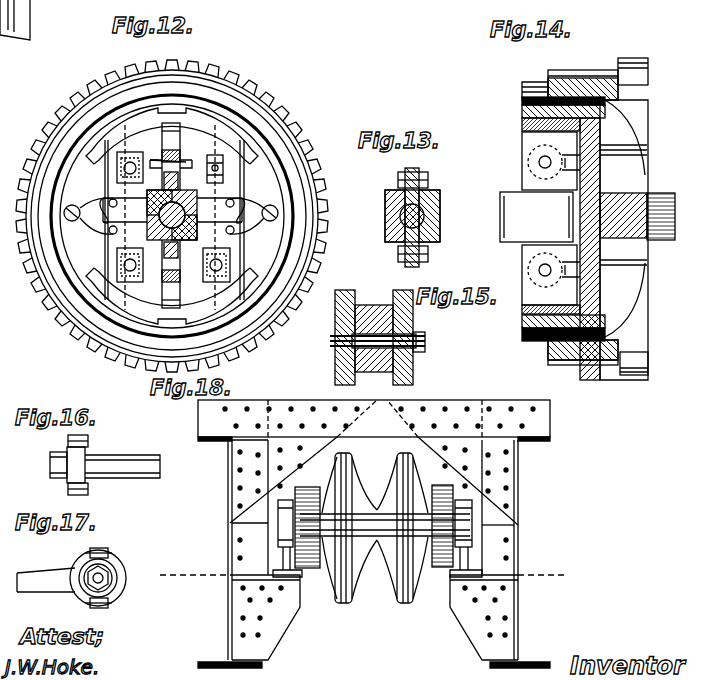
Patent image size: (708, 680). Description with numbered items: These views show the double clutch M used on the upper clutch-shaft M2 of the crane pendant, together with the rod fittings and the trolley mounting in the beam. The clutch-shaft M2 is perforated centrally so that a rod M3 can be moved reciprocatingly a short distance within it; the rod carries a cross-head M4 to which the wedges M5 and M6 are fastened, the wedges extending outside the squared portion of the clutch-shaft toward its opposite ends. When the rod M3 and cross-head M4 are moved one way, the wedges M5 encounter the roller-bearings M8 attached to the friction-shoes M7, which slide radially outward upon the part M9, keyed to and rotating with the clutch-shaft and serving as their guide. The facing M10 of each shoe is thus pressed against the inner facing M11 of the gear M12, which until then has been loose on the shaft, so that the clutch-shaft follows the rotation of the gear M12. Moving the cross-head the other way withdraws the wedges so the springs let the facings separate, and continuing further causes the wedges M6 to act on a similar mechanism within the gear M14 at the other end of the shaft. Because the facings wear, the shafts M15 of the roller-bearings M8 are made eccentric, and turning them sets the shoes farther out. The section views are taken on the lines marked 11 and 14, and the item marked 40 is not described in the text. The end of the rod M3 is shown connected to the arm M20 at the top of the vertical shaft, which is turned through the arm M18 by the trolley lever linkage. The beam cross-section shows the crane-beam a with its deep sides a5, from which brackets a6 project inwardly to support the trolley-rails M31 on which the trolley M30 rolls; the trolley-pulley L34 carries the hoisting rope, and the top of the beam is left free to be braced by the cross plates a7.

In FIG. 12, the section line 11 is at (173, 62).
In FIG. 12, the section line 14 is at (213, 62).
In FIG. 12, the gear M14 is at (248, 82).
In FIG. 14, the gear M14 is at (633, 208).
In FIG. 12, the gear M12 is at (172, 216).
In FIG. 14, the gear M12 is at (583, 208).
In FIG. 12, the facing M11 is at (172, 210).
In FIG. 14, the facing M11 is at (563, 203).
In FIG. 12, the facing M10 is at (172, 217).
In FIG. 12, the friction-shoe M7 is at (173, 207).
In FIG. 15, the friction-shoe M7 is at (382, 337).
In FIG. 14, the friction-shoe M7 is at (551, 216).
In FIG. 12, the roller-bearing M8 is at (171, 156).
In FIG. 15, the roller-bearing M8 is at (377, 330).
In FIG. 14, the roller-bearing M8 is at (522, 160).
In FIG. 12, the shaft M15 is at (186, 160).
In FIG. 12, the double clutch M is at (188, 158).
In FIG. 12, the pin 40 is at (186, 165).
In FIG. 12, the wedge M6 is at (186, 181).
In FIG. 12, the clutch-shaft M2 is at (147, 200).
In FIG. 13, the clutch-shaft M2 is at (422, 216).
In FIG. 14, the clutch-shaft M2 is at (661, 216).
In FIG. 12, the rod M3 is at (197, 200).
In FIG. 13, the rod M3 is at (385, 216).
In FIG. 16, the rod M3 is at (122, 466).
In FIG. 12, the wedge M5 is at (108, 229).
In FIG. 13, the wedge M5 is at (415, 168).
In FIG. 14, the wedge M5 is at (536, 216).
In FIG. 12, the guide part M9 is at (172, 274).
In FIG. 14, the guide part M9 is at (614, 240).
In FIG. 13, the cross-head M4 is at (443, 243).
In FIG. 15, the arm M18 is at (377, 341).
In FIG. 16, the arm M20 is at (66, 467).
In FIG. 17, the arm M20 is at (71, 578).
In FIG. 18, the crane-beam a is at (374, 413).
In FIG. 18, the cross plate a7 is at (378, 408).
In FIG. 18, the side of beam a5 is at (373, 548).
In FIG. 18, the bracket a6 is at (374, 621).
In FIG. 18, the trolley-rail M31 is at (366, 563).
In FIG. 18, the trolley M30 is at (371, 516).
In FIG. 18, the trolley-pulley L34 is at (402, 528).